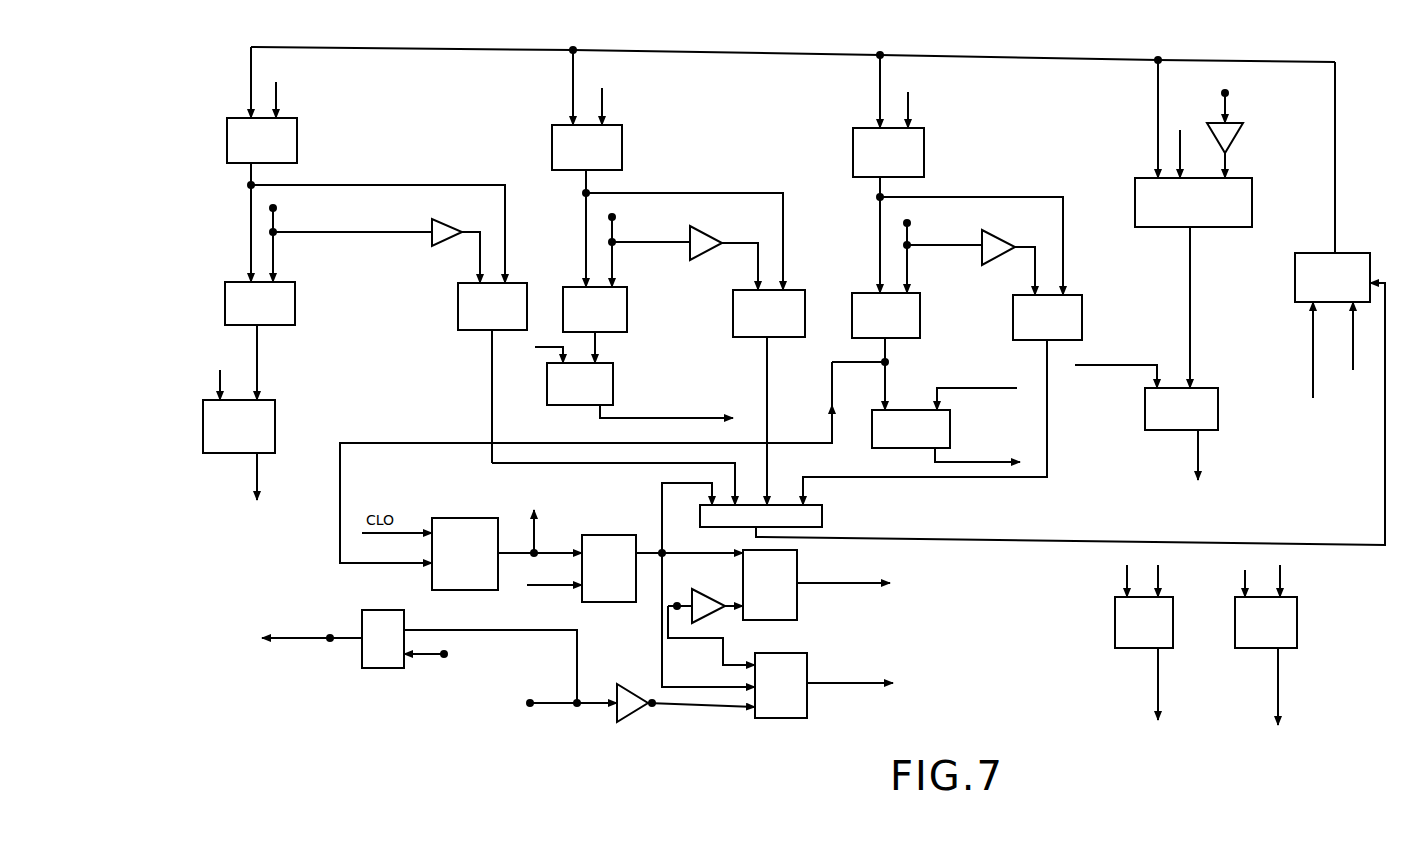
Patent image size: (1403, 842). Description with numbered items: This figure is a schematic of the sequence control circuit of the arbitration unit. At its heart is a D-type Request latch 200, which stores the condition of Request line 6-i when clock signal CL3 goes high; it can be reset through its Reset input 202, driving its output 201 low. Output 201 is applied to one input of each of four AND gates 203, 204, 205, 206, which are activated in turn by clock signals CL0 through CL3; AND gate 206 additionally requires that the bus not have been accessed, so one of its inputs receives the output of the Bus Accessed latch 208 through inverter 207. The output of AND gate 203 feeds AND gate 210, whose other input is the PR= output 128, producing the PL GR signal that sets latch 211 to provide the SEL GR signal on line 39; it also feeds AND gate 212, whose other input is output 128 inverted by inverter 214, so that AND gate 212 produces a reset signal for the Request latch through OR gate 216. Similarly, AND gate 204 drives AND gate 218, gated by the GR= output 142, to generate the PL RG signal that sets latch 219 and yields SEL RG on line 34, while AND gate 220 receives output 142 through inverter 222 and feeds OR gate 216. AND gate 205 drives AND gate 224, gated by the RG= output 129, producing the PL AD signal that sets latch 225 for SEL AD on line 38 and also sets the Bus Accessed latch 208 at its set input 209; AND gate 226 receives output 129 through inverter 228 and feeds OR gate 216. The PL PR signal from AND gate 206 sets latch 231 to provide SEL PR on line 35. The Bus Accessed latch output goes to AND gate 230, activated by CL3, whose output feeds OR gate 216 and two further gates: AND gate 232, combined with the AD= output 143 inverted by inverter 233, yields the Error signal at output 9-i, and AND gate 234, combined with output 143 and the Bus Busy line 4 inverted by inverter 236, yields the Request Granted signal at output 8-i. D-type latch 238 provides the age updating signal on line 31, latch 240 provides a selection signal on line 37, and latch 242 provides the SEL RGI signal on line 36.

The Request latch 200 is at (1295, 280).
The output of Request latch 201 is at (1335, 195).
The Reset input of Request latch 202 is at (1350, 545).
The AND gate 203 is at (297, 140).
The AND gate 204 is at (622, 148).
The AND gate 205 is at (924, 150).
The AND gate 206 is at (1252, 205).
The inverter 207 is at (1236, 86).
The Bus Accessed latch 208 is at (485, 590).
The set input of Bus Accessed latch 209 is at (370, 553).
The AND gate 210 is at (295, 305).
The latch 211 is at (275, 430).
The AND gate 212 is at (458, 305).
The inverter 214 is at (432, 232).
The OR gate 216 is at (822, 520).
The AND gate 218 is at (627, 308).
The latch 219 is at (613, 390).
The AND gate 220 is at (733, 310).
The inverter 222 is at (708, 236).
The AND gate 224 is at (920, 330).
The latch 225 is at (950, 430).
The AND gate 226 is at (1082, 318).
The inverter 228 is at (1000, 238).
The AND gate 230 is at (615, 602).
The latch 231 is at (1200, 388).
The AND gate 232 is at (797, 560).
The inverter 233 is at (716, 595).
The AND gate 234 is at (807, 660).
The inverter 236 is at (632, 688).
The D-type latch 238 is at (390, 668).
The latch 240 is at (1297, 625).
The latch 242 is at (1115, 620).
The PR= output 128 is at (351, 239).
The RG= output 129 is at (934, 249).
The GR= output 142 is at (649, 245).
The AD= output 143 is at (709, 635).
The Bus Busy line 4 is at (497, 699).
The age updating line 31 is at (330, 638).
The SEL RG line 34 is at (666, 409).
The SEL PR line 35 is at (1185, 475).
The SEL RGI line 36 is at (1152, 707).
The SEL GRI line 37 is at (1314, 686).
The SEL AD line 38 is at (979, 453).
The SEL GR line 39 is at (258, 492).
The Request line 6-i is at (1329, 333).
The Request Granted output 8-i is at (850, 683).
The Error output 9-i is at (843, 583).